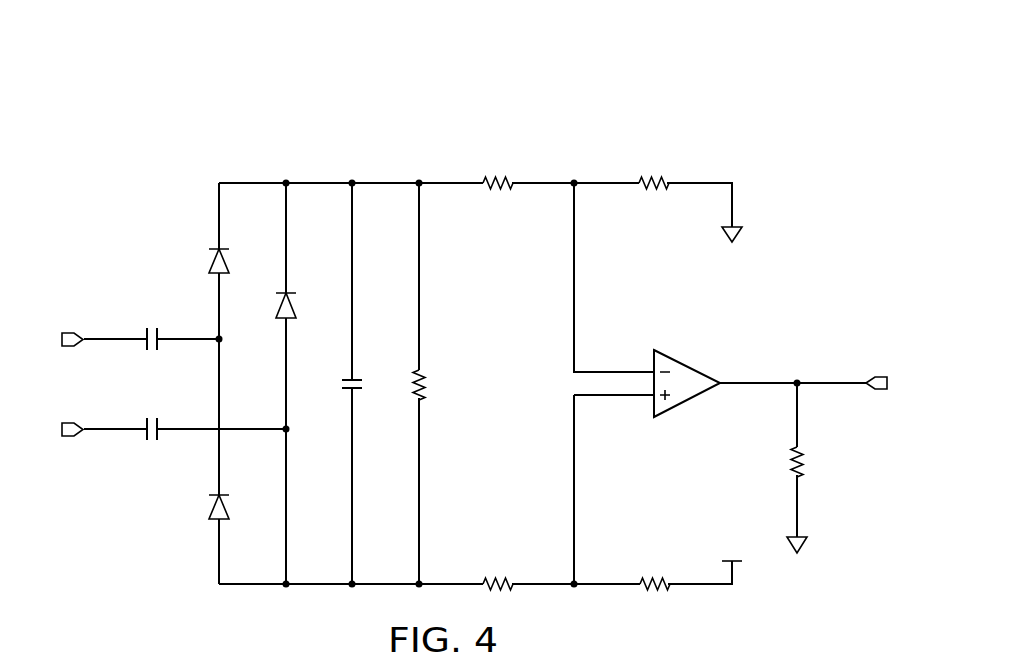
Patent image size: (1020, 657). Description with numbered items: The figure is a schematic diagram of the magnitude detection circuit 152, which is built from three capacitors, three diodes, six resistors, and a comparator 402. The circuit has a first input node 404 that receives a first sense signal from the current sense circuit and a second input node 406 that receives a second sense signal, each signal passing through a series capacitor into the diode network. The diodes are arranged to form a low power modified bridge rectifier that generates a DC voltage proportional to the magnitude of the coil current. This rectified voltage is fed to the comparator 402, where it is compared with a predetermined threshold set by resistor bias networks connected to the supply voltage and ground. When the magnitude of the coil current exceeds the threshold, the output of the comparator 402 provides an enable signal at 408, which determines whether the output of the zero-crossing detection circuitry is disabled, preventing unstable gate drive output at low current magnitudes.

The magnitude detection circuit 152 is at (185, 128).
The comparator 402 is at (688, 364).
The first input node 404 is at (67, 437).
The second input node 406 is at (67, 331).
The enable signal output 408 is at (879, 374).